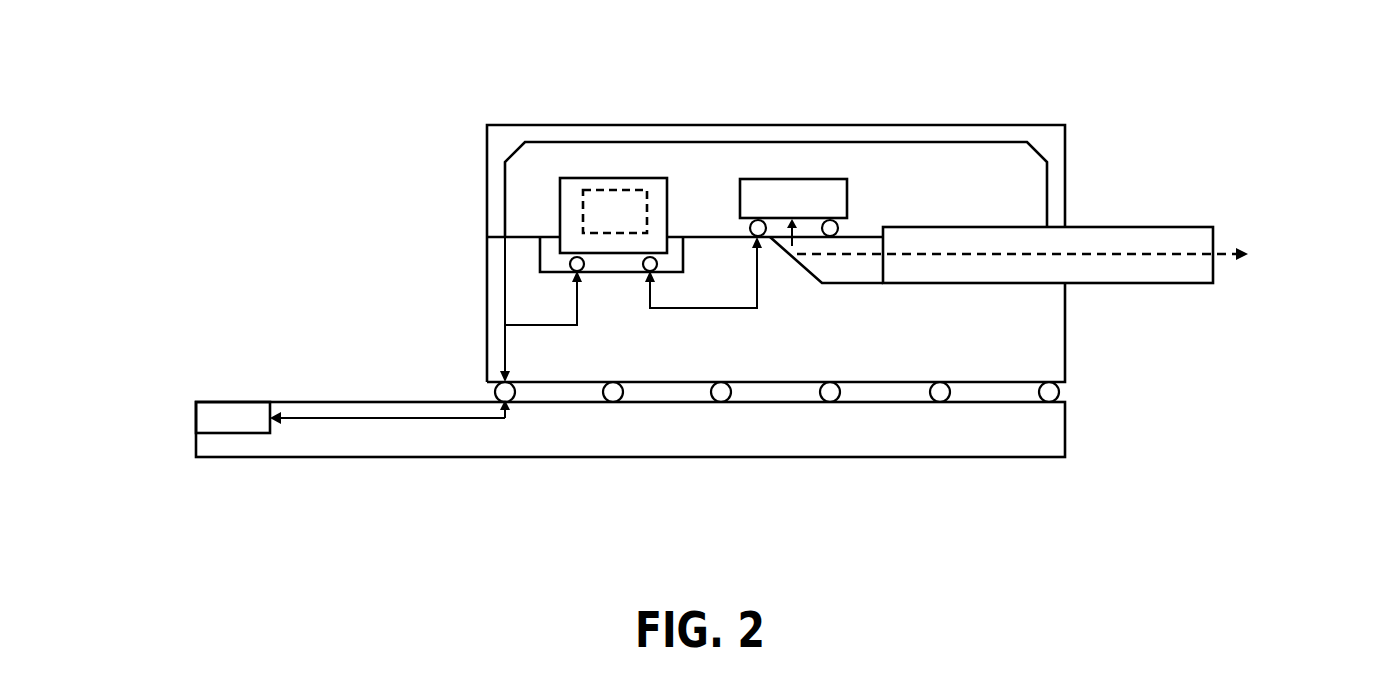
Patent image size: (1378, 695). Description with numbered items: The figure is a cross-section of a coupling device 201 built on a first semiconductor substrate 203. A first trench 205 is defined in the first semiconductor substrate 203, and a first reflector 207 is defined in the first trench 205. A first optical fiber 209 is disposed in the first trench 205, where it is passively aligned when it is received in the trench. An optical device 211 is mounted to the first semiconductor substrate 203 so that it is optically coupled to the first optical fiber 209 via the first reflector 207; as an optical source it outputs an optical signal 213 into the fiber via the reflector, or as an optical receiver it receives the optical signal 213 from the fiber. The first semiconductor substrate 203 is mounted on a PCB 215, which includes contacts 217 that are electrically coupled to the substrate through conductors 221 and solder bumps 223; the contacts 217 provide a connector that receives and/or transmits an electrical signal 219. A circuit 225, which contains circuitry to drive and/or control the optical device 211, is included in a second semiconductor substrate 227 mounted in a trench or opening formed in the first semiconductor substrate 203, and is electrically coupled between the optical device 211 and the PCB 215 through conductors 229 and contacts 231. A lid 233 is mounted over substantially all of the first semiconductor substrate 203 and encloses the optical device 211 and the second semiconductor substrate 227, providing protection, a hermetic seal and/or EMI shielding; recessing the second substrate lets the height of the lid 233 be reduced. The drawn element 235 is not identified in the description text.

The coupling device 201 is at (1022, 18).
The first semiconductor substrate 203 is at (1057, 328).
The first trench 205 is at (857, 284).
The first reflector 207 is at (803, 271).
The first optical fiber 209 is at (1135, 226).
The optical device 211 is at (848, 193).
The optical signal 213 is at (1300, 212).
The PCB 215 is at (1057, 423).
The contacts 217 is at (228, 400).
The electrical signal 219 is at (125, 443).
The conductors 221 is at (510, 420).
The solder bumps 223 is at (495, 390).
The circuit 225 is at (623, 188).
The second semiconductor substrate 227 is at (558, 208).
The conductors 229 is at (647, 306).
The contacts 231 is at (561, 279).
The lid 233 is at (913, 125).
The interposer 235 is at (675, 243).